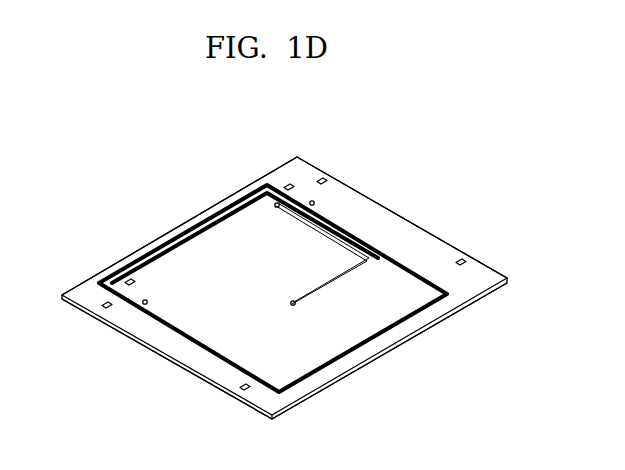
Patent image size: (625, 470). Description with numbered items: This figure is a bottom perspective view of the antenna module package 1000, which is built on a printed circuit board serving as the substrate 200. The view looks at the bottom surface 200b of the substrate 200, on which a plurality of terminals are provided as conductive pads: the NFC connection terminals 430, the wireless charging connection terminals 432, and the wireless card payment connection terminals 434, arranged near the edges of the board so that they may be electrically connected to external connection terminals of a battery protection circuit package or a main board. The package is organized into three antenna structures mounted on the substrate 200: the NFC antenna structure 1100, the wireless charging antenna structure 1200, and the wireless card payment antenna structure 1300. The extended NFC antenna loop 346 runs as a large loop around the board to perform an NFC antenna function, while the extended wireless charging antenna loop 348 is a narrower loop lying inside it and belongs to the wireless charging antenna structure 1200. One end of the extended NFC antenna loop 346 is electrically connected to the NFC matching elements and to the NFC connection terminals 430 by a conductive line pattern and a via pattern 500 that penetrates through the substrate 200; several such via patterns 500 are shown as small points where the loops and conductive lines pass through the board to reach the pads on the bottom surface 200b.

The antenna module package 1000 is at (141, 135).
The NFC antenna structure 1100 is at (180, 425).
The wireless charging antenna structure 1200 is at (253, 133).
The wireless card payment antenna structure 1300 is at (352, 126).
The substrate 200 is at (284, 311).
The bottom surface 200b is at (372, 361).
The extended NFC antenna loop 346 is at (371, 250).
The extended wireless charging antenna loop 348 is at (333, 284).
The via pattern 500 is at (315, 203).
The NFC connection terminals 430 is at (105, 308).
The wireless charging connection terminals 432 is at (287, 184).
The wireless card payment connection terminals 434 is at (324, 179).